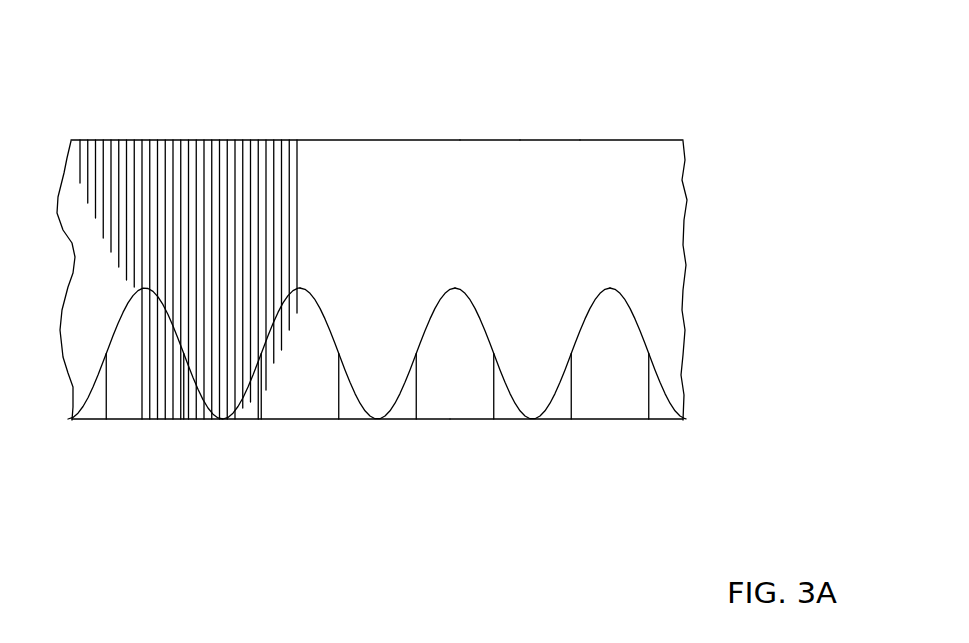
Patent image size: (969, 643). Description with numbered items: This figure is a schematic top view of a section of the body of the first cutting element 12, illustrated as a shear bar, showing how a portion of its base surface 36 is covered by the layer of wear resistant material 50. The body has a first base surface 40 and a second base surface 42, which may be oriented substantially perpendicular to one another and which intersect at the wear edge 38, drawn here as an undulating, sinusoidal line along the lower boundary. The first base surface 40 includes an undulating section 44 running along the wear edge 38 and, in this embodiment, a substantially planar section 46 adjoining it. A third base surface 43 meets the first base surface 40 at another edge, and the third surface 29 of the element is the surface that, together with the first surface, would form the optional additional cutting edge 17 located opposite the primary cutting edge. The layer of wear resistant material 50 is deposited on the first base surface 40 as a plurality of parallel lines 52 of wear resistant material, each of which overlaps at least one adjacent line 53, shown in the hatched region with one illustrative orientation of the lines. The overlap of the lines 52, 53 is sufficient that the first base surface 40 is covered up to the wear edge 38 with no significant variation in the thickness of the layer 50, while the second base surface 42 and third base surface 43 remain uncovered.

The first cutting element 12 is at (584, 62).
The additional cutting edge 17 is at (100, 140).
The layer of wear resistant material 50 is at (174, 132).
The line of wear resistant material 52 is at (226, 152).
The adjacent line of wear resistant material 53 is at (228, 156).
The first base surface 40 is at (338, 160).
The third base surface 43 is at (440, 140).
The third surface 29 is at (497, 140).
The substantially planar section 46 is at (547, 162).
The second base surface 42 is at (300, 420).
The undulating section 44 is at (380, 388).
The base surface 36 is at (522, 362).
The wear edge 38 is at (547, 422).